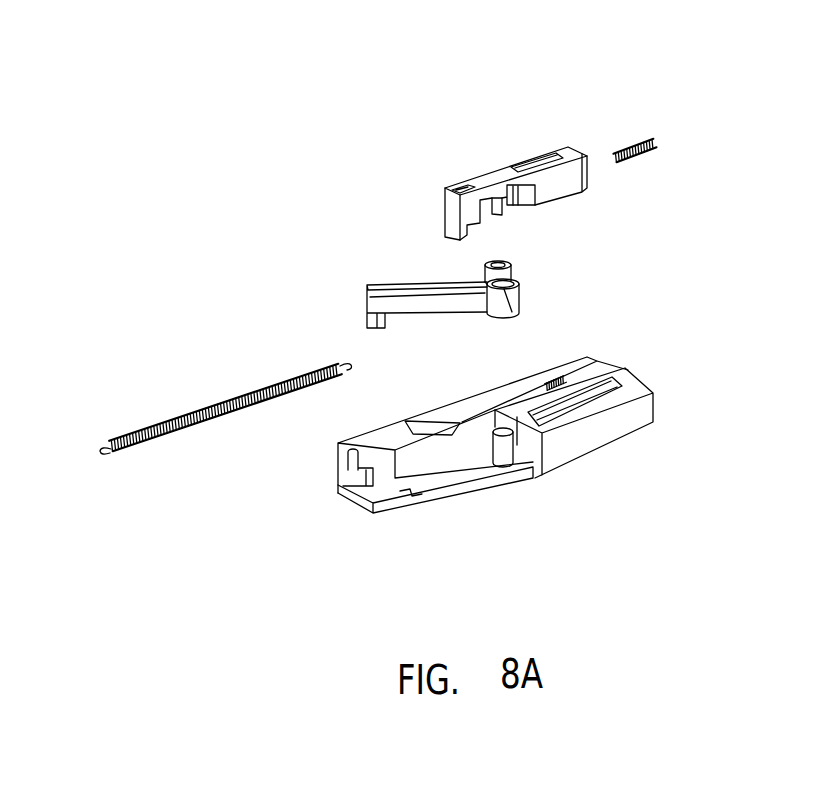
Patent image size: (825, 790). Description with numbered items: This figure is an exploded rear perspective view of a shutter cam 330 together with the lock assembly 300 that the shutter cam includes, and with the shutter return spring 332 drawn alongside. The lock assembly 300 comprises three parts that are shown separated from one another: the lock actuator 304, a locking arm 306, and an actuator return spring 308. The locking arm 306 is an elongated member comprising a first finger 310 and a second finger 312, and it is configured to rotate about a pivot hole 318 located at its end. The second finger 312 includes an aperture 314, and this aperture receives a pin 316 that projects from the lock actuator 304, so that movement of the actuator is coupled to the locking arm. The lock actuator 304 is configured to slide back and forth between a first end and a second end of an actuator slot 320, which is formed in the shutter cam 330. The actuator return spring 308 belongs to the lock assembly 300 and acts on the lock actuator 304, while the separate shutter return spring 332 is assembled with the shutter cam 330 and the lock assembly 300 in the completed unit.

The lock assembly 300 is at (730, 95).
The lock actuator 304 is at (450, 214).
The locking arm 306 is at (591, 287).
The actuator return spring 308 is at (632, 142).
The first finger 310 is at (434, 314).
The second finger 312 is at (512, 261).
The aperture 314 is at (483, 265).
The pin 316 is at (501, 214).
The pivot hole 318 is at (521, 310).
The actuator slot 320 is at (418, 411).
The shutter cam 330 is at (646, 422).
The shutter return spring 332 is at (176, 420).